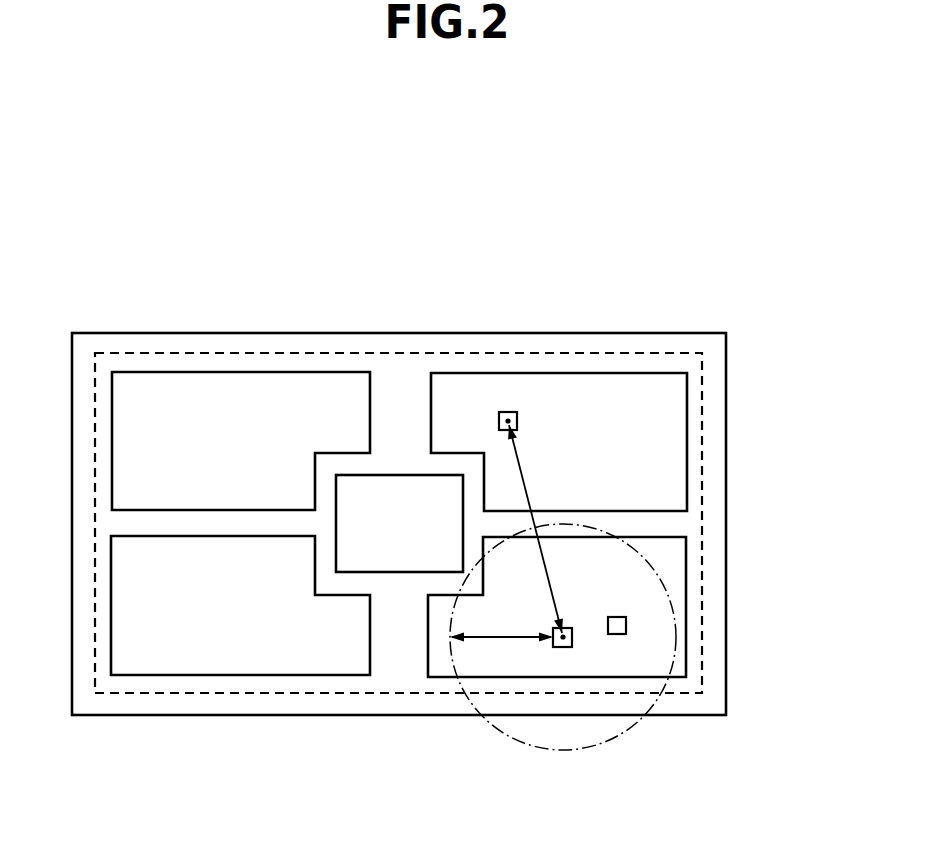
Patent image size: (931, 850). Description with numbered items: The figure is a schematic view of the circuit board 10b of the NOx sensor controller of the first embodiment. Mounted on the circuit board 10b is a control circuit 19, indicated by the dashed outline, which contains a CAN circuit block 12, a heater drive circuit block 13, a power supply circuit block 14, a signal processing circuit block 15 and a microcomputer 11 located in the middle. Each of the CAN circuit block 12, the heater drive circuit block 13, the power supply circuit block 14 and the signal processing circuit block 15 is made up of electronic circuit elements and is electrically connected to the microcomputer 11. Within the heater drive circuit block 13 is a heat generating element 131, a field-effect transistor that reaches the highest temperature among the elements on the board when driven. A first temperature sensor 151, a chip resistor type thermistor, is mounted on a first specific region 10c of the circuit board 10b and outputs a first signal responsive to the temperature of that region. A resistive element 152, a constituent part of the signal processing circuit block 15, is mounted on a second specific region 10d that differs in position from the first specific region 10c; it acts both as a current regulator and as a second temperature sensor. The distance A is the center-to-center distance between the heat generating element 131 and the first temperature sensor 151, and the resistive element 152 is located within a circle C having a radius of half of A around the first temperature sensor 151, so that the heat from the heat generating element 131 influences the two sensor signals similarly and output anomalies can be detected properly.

The circuit board 10b is at (338, 290).
The control circuit 19 is at (703, 462).
The CAN circuit block 12 is at (205, 372).
The heater drive circuit block 13 is at (687, 405).
The power supply circuit block 14 is at (205, 675).
The signal processing circuit block 15 is at (687, 548).
The microcomputer 11 is at (388, 475).
The heat generating element 131 is at (508, 412).
The first temperature sensor 151 is at (555, 647).
The resistive element 152 is at (626, 622).
The first specific region 10c is at (575, 647).
The second specific region 10d is at (616, 634).
The center-to-center distance A is at (522, 477).
The circle C is at (640, 722).